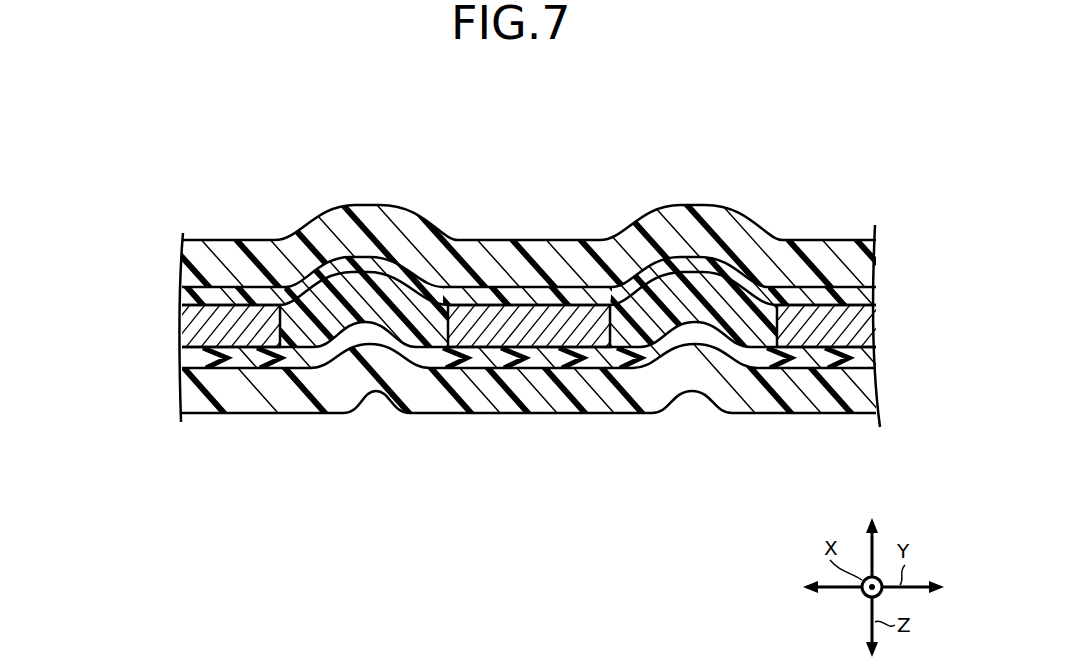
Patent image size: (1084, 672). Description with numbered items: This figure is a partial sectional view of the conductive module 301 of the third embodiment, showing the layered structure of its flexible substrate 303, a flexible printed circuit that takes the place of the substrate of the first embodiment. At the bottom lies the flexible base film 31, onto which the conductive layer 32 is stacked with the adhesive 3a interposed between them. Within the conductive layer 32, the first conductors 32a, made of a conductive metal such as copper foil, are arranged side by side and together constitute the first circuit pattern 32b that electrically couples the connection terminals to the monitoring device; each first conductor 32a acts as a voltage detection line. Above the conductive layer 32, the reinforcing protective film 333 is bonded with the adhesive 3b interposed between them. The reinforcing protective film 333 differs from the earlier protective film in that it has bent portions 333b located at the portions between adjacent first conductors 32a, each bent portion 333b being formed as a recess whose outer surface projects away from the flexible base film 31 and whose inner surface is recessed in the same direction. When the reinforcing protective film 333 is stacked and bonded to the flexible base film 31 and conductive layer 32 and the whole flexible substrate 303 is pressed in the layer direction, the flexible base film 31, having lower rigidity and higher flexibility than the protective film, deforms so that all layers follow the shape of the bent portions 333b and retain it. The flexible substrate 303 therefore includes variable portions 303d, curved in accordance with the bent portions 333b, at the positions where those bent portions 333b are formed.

The flexible substrate 303 is at (539, 266).
The conductive module 301 is at (529, 326).
The reinforcing protective film 333 is at (560, 283).
The bent portions 333b is at (368, 215).
The adhesive 3b is at (200, 293).
The conductive layer 32 is at (524, 323).
The first conductors 32a is at (234, 333).
The first circuit pattern 32b is at (290, 275).
The adhesive 3a is at (200, 357).
The flexible base film 31 is at (444, 358).
The variable portions 303d is at (364, 430).